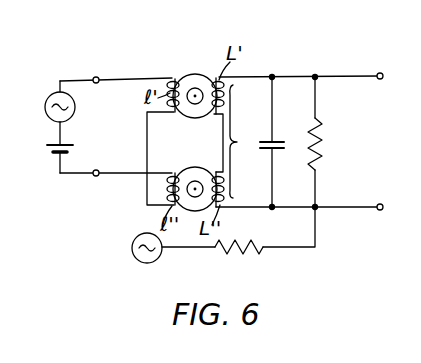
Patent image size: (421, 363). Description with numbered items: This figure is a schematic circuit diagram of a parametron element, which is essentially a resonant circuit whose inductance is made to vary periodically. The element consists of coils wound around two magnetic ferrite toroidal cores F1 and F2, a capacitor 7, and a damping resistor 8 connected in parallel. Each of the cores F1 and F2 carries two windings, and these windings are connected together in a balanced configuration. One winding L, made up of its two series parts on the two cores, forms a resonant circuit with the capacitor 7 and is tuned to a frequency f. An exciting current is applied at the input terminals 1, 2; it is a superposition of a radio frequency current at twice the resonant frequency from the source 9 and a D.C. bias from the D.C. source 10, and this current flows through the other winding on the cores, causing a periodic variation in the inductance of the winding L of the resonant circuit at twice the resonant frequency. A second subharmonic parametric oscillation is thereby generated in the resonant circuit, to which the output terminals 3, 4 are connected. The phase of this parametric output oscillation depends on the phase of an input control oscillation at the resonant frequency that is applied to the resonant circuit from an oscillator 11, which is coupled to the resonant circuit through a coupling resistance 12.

The input terminal 1 is at (97, 77).
The input terminal 2 is at (96, 170).
The output terminal 3 is at (380, 80).
The output terminal 4 is at (380, 211).
The capacitor 7 is at (264, 150).
The damping resistor 8 is at (320, 142).
The source 9 is at (74, 106).
The D.C. source 10 is at (72, 146).
The oscillator 11 is at (153, 261).
The coupling resistance 12 is at (256, 244).
The magnetic ferrite toroidal core F1 is at (194, 74).
The magnetic ferrite toroidal core F2 is at (188, 168).
The winding L is at (241, 141).